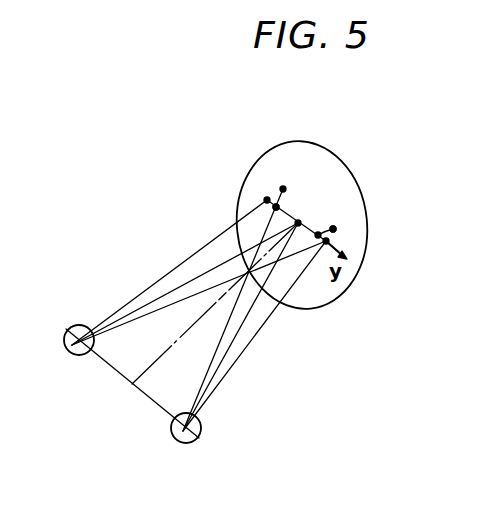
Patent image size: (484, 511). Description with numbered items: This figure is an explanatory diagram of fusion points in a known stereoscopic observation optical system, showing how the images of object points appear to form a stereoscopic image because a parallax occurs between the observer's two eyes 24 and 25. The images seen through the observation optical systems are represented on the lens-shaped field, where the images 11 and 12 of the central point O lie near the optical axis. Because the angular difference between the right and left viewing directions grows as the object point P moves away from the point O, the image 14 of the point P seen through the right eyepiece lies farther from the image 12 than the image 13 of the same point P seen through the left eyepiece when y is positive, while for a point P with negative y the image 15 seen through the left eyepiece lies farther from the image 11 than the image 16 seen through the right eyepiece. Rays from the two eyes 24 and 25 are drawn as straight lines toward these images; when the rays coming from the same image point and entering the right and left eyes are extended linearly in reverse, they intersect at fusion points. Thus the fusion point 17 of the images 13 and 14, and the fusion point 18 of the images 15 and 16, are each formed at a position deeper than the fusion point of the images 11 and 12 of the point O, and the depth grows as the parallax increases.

The image of the point O 11 is at (276, 207).
The image of the point O 12 is at (276, 207).
The image of the point P 13 is at (333, 229).
The image of the point P 14 is at (326, 241).
The image of the point P 15 is at (266, 200).
The image of the point P 16 is at (298, 223).
The fusion point 17 is at (332, 230).
The fusion point 18 is at (283, 189).
The eye 24 is at (186, 443).
The eye 25 is at (77, 355).